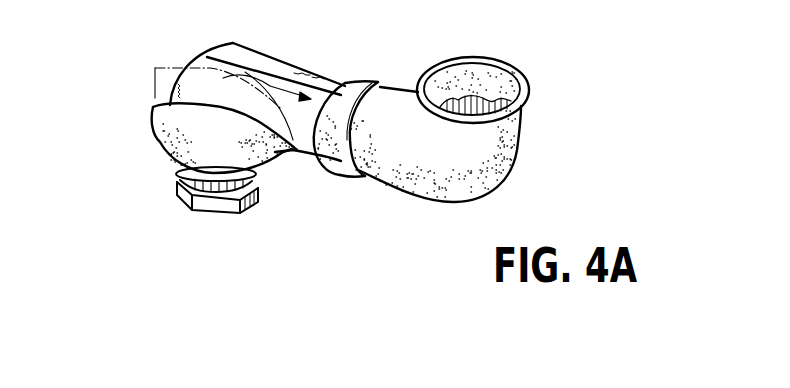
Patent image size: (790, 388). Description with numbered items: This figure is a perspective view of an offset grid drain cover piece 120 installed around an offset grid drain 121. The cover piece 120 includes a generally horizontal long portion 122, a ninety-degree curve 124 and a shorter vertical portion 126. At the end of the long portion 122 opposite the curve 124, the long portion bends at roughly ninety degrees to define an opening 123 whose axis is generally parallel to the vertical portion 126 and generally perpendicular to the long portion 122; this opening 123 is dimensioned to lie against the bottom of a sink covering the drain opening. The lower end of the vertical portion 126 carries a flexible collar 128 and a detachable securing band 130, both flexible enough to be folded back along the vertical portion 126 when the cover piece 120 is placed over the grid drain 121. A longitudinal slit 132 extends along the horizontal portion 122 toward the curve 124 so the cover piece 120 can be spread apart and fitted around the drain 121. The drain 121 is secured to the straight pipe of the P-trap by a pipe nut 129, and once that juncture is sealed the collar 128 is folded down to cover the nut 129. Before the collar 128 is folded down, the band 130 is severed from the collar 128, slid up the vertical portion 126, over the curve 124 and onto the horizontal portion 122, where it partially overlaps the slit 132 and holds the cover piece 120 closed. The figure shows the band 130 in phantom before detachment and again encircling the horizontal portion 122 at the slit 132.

The offset grid drain cover piece 120 is at (519, 163).
The offset grid drain 121 is at (185, 205).
The generally horizontal long portion 122 is at (287, 57).
The opening 123 is at (493, 75).
The 90° curve 124 is at (190, 64).
The shorter vertical portion 126 is at (166, 99).
The flexible collar 128 is at (158, 128).
The pipe nut 129 is at (207, 204).
The detachable securing band 130 is at (155, 68).
The longitudinal slit 132 is at (248, 60).